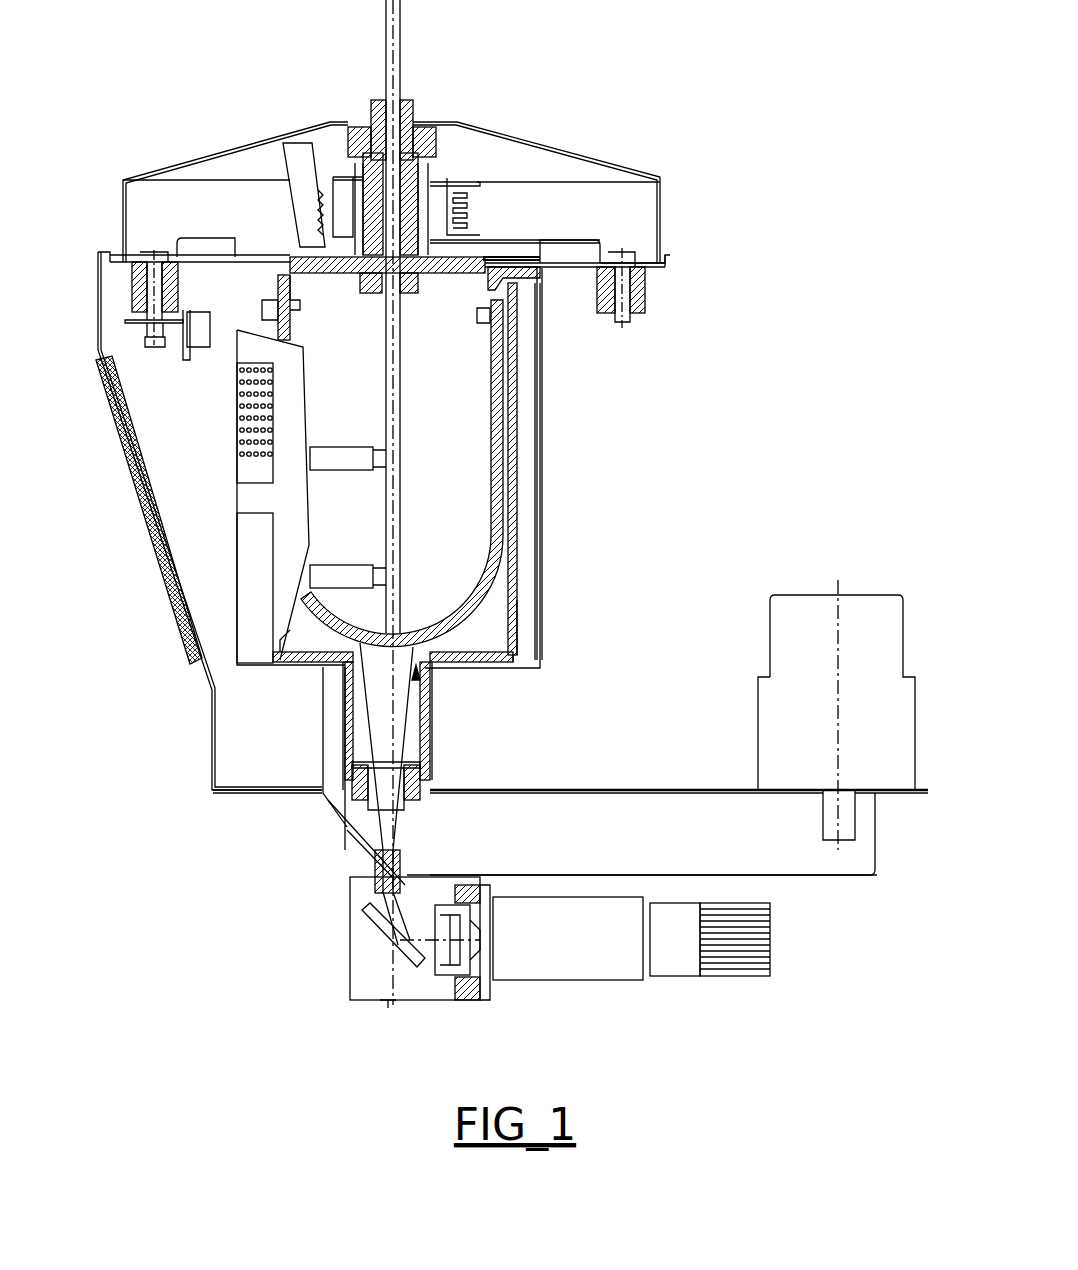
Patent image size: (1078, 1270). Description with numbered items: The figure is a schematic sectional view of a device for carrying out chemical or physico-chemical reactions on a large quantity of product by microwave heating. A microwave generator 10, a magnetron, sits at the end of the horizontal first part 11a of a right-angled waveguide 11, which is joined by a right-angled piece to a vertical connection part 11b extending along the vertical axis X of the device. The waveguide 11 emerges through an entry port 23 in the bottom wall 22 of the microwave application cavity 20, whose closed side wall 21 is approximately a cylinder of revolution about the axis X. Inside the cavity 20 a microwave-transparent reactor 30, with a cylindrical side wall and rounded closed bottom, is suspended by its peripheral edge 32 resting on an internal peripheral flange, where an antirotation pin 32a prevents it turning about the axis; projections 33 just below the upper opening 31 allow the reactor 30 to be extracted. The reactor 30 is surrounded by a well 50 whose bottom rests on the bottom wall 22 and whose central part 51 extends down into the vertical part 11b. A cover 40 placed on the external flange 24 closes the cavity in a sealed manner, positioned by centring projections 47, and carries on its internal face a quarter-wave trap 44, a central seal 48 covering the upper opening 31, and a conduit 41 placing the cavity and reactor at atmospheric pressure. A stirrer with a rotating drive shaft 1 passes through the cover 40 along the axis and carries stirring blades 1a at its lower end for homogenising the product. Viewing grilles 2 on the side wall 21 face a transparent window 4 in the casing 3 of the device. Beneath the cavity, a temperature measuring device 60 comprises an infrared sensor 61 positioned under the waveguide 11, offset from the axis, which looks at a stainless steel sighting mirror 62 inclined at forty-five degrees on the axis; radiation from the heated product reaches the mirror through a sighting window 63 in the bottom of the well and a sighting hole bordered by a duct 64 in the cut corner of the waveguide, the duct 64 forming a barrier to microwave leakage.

The rotating drive shaft 1 is at (400, 410).
The stirring blades 1a is at (340, 457).
The grilles 2 is at (245, 470).
The casing 3 is at (200, 662).
The transparent window 4 is at (175, 590).
The microwave generator 10 is at (912, 695).
The right-angled waveguide 11 is at (657, 787).
The horizontal first part 11a is at (590, 788).
The vertical connection part 11b is at (432, 770).
The microwave application cavity 20 is at (540, 595).
The closed side wall 21 is at (540, 440).
The bottom wall 22 is at (522, 665).
The entry port 23 is at (432, 690).
The flange 24 is at (667, 263).
The reactor 30 is at (500, 480).
The upper opening 31 is at (486, 278).
The peripheral edge 32 is at (553, 335).
The antirotation pin 32a is at (248, 250).
The projections 33 is at (292, 318).
The cover 40 is at (555, 152).
The conduit 41 is at (295, 150).
The quarter-wave trap 44 is at (582, 252).
The centring projections 47 is at (135, 290).
The seal 48 is at (470, 256).
The well 50 is at (517, 548).
The central part of the well 51 is at (432, 720).
The temperature measuring device 60 is at (387, 1035).
The infrared sensor 61 is at (568, 978).
The sighting mirror 62 is at (365, 912).
The sighting window 63 is at (345, 815).
The duct 64 is at (372, 862).